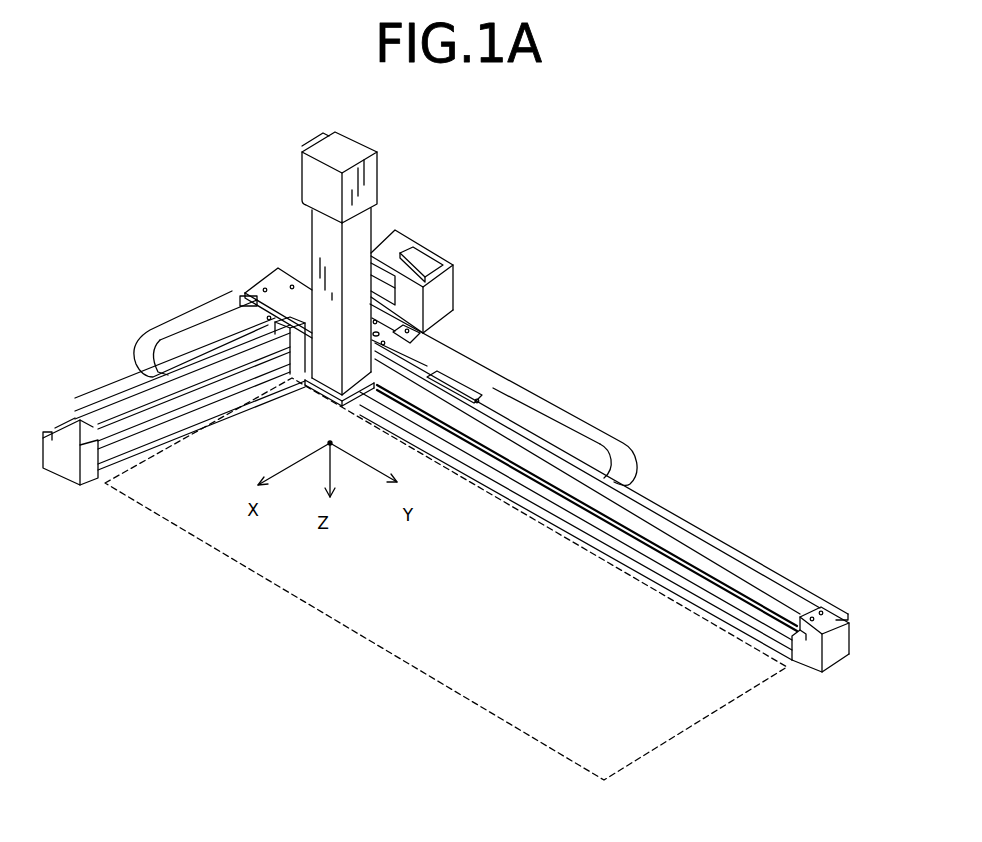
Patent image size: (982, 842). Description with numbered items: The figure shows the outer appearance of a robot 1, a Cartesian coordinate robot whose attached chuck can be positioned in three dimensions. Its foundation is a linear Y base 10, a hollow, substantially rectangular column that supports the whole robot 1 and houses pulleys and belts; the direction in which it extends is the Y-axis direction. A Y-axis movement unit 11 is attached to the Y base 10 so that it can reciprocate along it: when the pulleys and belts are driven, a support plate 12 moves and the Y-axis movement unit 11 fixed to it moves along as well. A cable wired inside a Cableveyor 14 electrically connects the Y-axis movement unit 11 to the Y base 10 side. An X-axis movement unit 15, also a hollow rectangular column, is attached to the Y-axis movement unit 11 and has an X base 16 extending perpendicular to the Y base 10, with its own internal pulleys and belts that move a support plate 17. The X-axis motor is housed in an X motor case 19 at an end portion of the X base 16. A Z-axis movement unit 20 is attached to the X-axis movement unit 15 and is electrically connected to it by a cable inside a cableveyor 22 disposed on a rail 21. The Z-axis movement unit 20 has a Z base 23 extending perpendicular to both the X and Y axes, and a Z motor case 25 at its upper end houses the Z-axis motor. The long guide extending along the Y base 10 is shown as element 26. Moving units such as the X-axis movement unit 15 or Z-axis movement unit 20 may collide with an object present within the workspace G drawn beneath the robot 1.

The robot 1 is at (664, 225).
The Y base 10 is at (835, 650).
The Y-axis movement unit 11 is at (622, 443).
The support plate 12 is at (393, 350).
The Cableveyor 14 is at (513, 377).
The X-axis movement unit 15 is at (175, 347).
The X base 16 is at (65, 462).
The support plate 17 is at (272, 283).
The X motor case 19 is at (407, 233).
The Z-axis movement unit 20 is at (362, 256).
The rail 21 is at (88, 395).
The cableveyor 22 is at (200, 308).
The Z base 23 is at (330, 365).
The Z motor case 25 is at (343, 147).
The Y-axis rail 26 is at (723, 537).
The workspace G is at (705, 719).